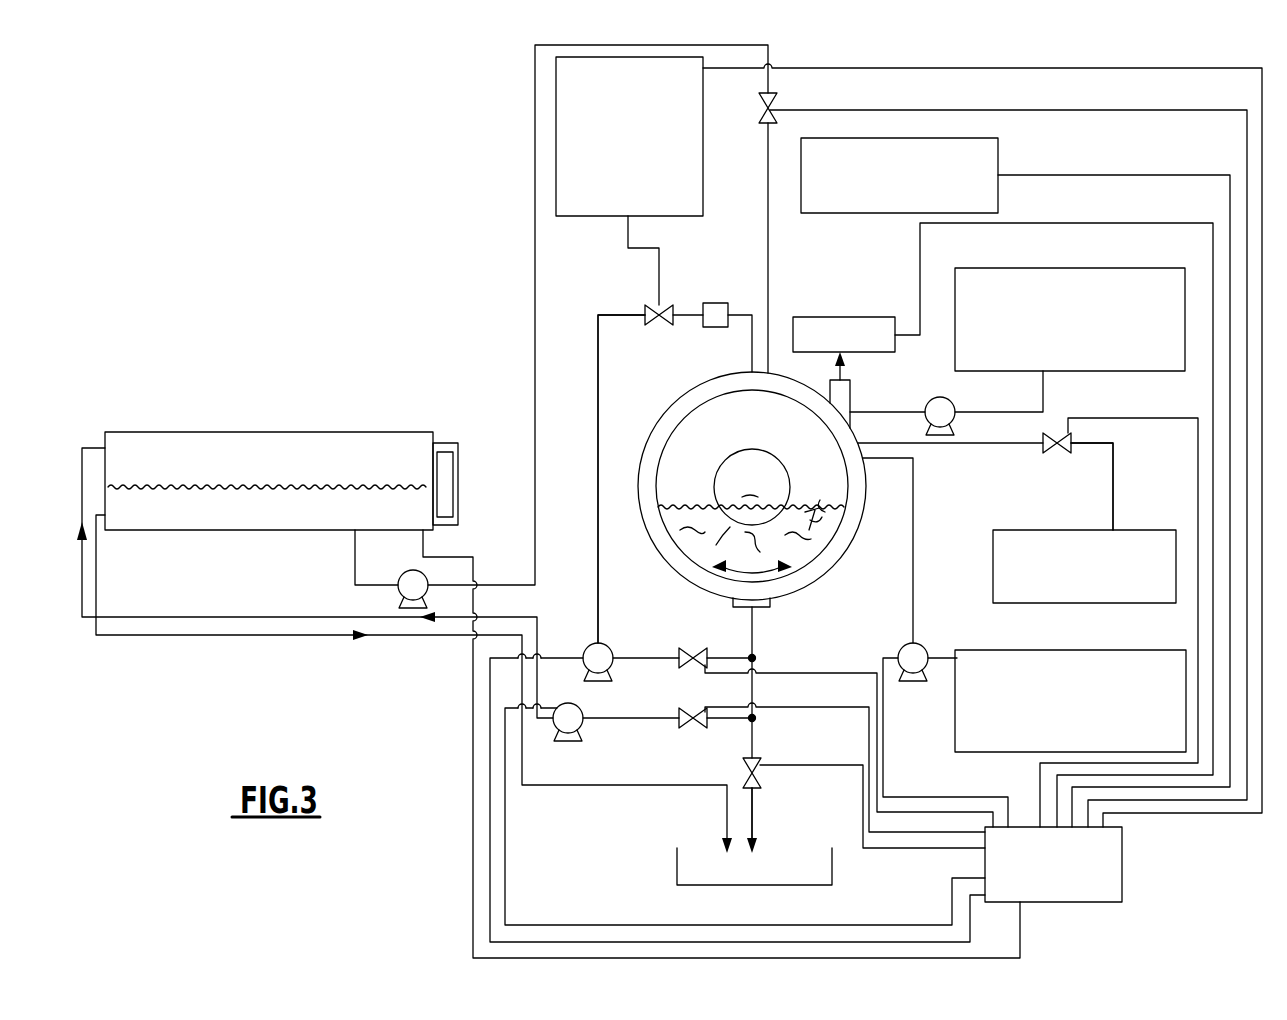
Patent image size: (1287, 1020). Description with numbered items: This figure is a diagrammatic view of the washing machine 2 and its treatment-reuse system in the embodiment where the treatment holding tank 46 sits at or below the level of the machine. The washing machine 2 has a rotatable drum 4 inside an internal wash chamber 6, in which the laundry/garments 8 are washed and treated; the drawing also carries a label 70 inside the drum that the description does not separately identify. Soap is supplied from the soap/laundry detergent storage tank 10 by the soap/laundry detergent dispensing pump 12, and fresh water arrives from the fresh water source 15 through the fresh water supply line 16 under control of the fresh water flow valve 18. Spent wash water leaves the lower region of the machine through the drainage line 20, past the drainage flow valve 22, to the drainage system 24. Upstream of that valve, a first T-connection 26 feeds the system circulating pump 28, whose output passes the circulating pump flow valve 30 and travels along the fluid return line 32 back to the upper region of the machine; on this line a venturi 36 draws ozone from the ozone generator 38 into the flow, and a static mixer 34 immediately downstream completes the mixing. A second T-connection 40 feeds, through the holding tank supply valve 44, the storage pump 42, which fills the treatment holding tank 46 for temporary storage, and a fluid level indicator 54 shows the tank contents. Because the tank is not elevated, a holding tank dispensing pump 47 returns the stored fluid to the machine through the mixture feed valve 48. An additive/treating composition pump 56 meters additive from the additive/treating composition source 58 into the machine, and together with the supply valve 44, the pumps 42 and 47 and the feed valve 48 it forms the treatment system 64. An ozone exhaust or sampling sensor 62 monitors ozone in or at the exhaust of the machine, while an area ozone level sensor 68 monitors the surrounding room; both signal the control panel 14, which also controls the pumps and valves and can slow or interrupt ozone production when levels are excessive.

The washing machine 2 is at (372, 164).
The rotatable drum 4 is at (690, 549).
The internal wash chamber 6 is at (836, 498).
The laundry/garments 8 is at (822, 512).
The soap/laundry detergent storage tank 10 is at (1095, 268).
The soap/laundry detergent dispensing pump 12 is at (940, 397).
The control panel 14 is at (1085, 902).
The fresh water source 15 is at (1015, 530).
The fresh water supply line 16 is at (1113, 442).
The fresh water flow valve 18 is at (740, 455).
The drainage line 20 is at (756, 822).
The drainage flow valve 22 is at (760, 778).
The drainage system 24 is at (677, 872).
The first T-connection 26 is at (770, 652).
The system circulating pump 28 is at (608, 648).
The circulating pump flow valve 30 is at (706, 632).
The fluid return line 32 is at (612, 315).
The static mixer 34 is at (715, 303).
The venturi 36 is at (664, 322).
The ozone generator 38 is at (703, 138).
The second T-connection 40 is at (773, 718).
The storage pump 42 is at (584, 722).
The holding tank supply valve 44 is at (698, 728).
The treatment holding tank 46 is at (382, 432).
The holding tank dispensing pump 47 is at (410, 571).
The mixture feed valve 48 is at (775, 100).
The fluid level indicator 54 is at (458, 490).
The additive/treating composition pump 56 is at (920, 646).
The additive/treating composition source 58 is at (1068, 650).
The ozone exhaust or sampling sensor 62 is at (845, 317).
The treatment system 64 is at (850, 400).
The area ozone level sensor 68 is at (998, 156).
The drum 70 is at (736, 435).